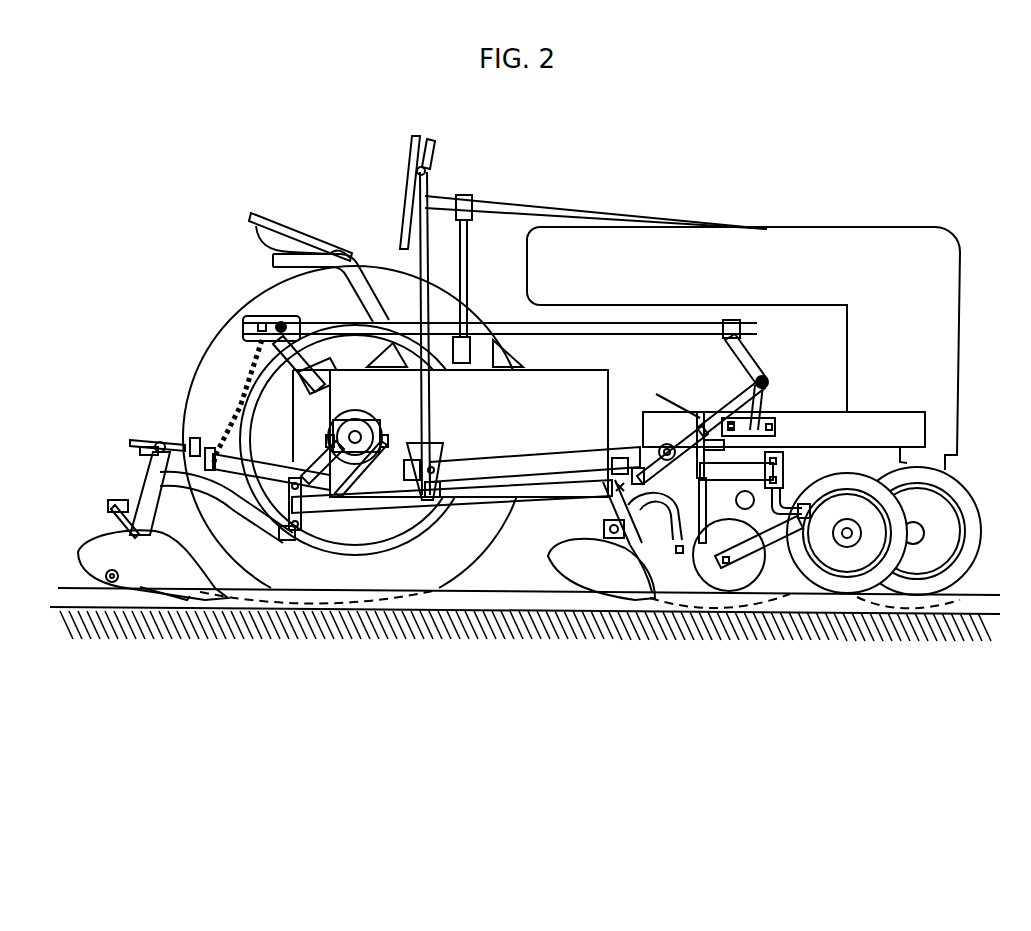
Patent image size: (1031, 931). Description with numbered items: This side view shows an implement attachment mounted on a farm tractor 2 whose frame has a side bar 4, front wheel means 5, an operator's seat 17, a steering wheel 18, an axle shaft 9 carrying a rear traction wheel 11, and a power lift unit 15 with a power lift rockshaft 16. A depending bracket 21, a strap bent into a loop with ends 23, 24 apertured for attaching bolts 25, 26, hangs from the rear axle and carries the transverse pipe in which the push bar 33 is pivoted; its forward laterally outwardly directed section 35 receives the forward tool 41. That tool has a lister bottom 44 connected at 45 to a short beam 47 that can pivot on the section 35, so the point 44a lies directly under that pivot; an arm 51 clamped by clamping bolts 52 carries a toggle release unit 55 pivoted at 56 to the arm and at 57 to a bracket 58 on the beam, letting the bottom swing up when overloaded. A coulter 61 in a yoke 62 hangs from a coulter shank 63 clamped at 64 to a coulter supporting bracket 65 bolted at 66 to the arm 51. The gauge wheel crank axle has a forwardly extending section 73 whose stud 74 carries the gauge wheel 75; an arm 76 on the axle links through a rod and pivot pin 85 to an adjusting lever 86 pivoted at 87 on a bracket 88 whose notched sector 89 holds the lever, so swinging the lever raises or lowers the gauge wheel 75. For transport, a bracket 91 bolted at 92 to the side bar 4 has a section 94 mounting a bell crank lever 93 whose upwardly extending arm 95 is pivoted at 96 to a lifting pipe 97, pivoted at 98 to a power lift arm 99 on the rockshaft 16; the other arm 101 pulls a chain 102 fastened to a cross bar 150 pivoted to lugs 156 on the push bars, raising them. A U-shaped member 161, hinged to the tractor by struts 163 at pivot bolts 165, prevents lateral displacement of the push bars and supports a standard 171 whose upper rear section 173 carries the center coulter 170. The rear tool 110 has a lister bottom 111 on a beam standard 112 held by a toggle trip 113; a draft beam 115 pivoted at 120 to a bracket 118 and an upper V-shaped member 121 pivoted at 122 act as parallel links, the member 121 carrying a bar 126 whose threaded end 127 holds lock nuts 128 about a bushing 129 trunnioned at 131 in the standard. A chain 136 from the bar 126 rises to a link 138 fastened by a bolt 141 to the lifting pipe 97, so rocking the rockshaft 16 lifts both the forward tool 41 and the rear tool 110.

The farm tractor 2 is at (858, 222).
The side bar 4 is at (783, 411).
The front wheel means 5 is at (960, 498).
The axle shaft 9 is at (357, 432).
The rear traction wheel 11 is at (370, 278).
The power lift unit 15 is at (288, 395).
The power lift rockshaft 16 is at (317, 362).
The operator's seat 17 is at (285, 242).
The steering wheel 18 is at (410, 195).
The depending bracket 21 is at (348, 492).
The bracket end 23 is at (335, 437).
The bracket end 24 is at (382, 437).
The attaching bolt 25 is at (327, 445).
The attaching bolt 26 is at (385, 442).
The push bar 33 is at (525, 495).
The laterally outwardly directed section 35 is at (732, 497).
The forward tool 41 is at (567, 515).
The lister bottom 44 is at (588, 573).
The point 44a is at (722, 600).
The connection 45 is at (606, 527).
The short beam 47 is at (613, 487).
The arm 51 is at (705, 443).
The clamping bolts 52 is at (730, 540).
The toggle release unit 55 is at (648, 442).
The pivot 56 is at (707, 408).
The pivot 57 is at (633, 460).
The bracket 58 is at (613, 507).
The coulter 61 is at (743, 584).
The yoke 62 is at (773, 540).
The coulter shank 63 is at (807, 498).
The clamp 64 is at (773, 453).
The coulter supporting bracket 65 is at (770, 445).
The bolt 66 is at (707, 470).
The forwardly extending section 73 is at (783, 503).
The stud 74 is at (847, 538).
The gauge wheel 75 is at (880, 573).
The arm 76 is at (698, 420).
The pivot pin 85 is at (445, 457).
The adjusting lever 86 is at (430, 387).
The pivot 87 is at (425, 495).
The bracket 88 is at (450, 503).
The sector 89 is at (440, 442).
The bracket 91 is at (758, 397).
The bolts 92 is at (733, 421).
The bell crank lever 93 is at (755, 343).
The laterally outwardly directed section 94 is at (760, 377).
The upwardly extending arm 95 is at (733, 352).
The pivot 96 is at (729, 320).
The lifting pipe 97 is at (502, 323).
The pivot 98 is at (279, 327).
The power lift arm 99 is at (302, 345).
The arm 101 is at (727, 421).
The chain 102 is at (683, 447).
The rear tool 110 is at (75, 558).
The lister bottom 111 is at (182, 570).
The beam standard 112 is at (152, 470).
The toggle trip 113 is at (110, 513).
The draft beam 115 is at (175, 488).
The bracket 118 is at (309, 507).
The pivot 120 is at (283, 528).
The V-shaped member 121 is at (268, 458).
The pivot 122 is at (307, 477).
The bar 126 is at (199, 455).
The threaded end 127 is at (127, 445).
The lock nuts 128 is at (177, 447).
The bushing 129 is at (158, 442).
The trunnion 131 is at (140, 452).
The chain 136 is at (238, 378).
The link 138 is at (255, 347).
The bolt 141 is at (253, 325).
The cross bar 150 is at (745, 542).
The apertured lug 156 is at (662, 498).
The U-shaped member 161 is at (656, 523).
The strut 163 is at (613, 463).
The pivot bolt 165 is at (617, 460).
The coulter 170 is at (778, 590).
The standard 171 is at (650, 552).
The upper rear section 173 is at (638, 517).